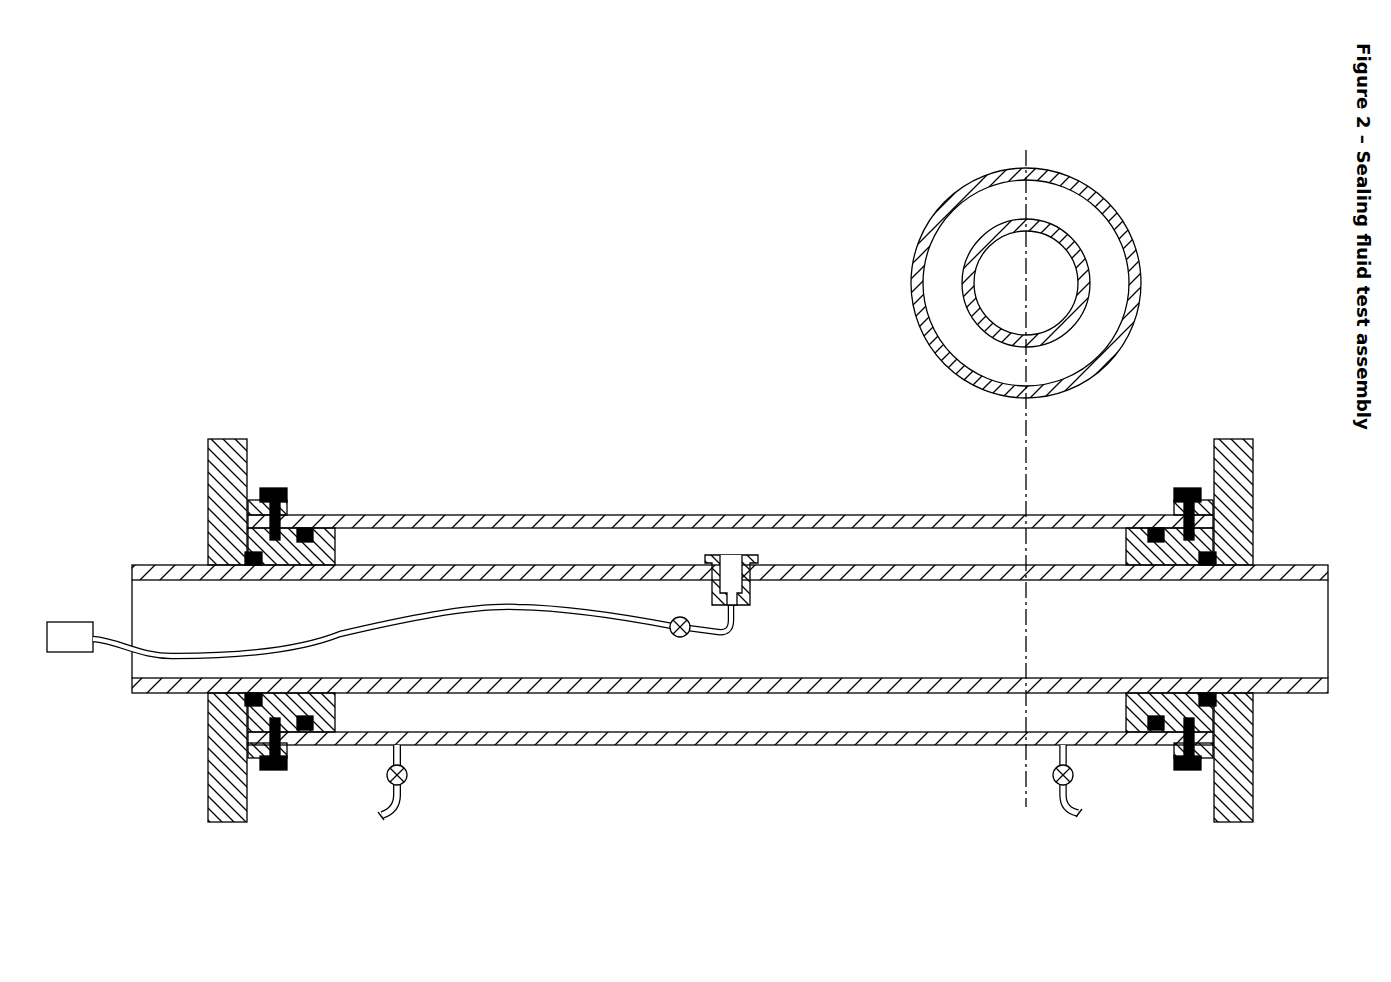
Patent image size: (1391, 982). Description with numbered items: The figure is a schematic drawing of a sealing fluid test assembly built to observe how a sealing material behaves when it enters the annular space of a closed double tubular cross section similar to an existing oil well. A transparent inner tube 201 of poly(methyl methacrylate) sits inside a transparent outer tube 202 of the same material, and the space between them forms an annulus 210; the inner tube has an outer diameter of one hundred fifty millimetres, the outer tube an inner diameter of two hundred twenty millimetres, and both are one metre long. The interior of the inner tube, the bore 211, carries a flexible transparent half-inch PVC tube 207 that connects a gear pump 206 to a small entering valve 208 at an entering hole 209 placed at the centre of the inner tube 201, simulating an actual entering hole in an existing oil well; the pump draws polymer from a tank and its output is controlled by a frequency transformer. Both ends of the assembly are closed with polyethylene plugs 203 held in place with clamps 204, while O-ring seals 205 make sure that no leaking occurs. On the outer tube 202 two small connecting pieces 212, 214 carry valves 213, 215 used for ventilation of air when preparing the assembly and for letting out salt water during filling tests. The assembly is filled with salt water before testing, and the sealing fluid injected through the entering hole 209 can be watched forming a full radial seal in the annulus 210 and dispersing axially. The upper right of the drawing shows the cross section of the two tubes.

The inner tube 201 is at (155, 565).
The outer tube 202 is at (417, 515).
The plugs 203 is at (232, 439).
The clamps 204 is at (280, 488).
The O-ring seals 205 is at (246, 552).
The gear pump 206 is at (66, 622).
The flexible transparent PVC tube 207 is at (530, 604).
The entering valve 208 is at (676, 637).
The entering hole 209 is at (772, 572).
The annulus 210 is at (663, 545).
The bore 211 is at (897, 610).
The connecting piece 212 is at (400, 805).
The valve 213 is at (408, 774).
The connecting piece 214 is at (1057, 804).
The valve 215 is at (1074, 774).